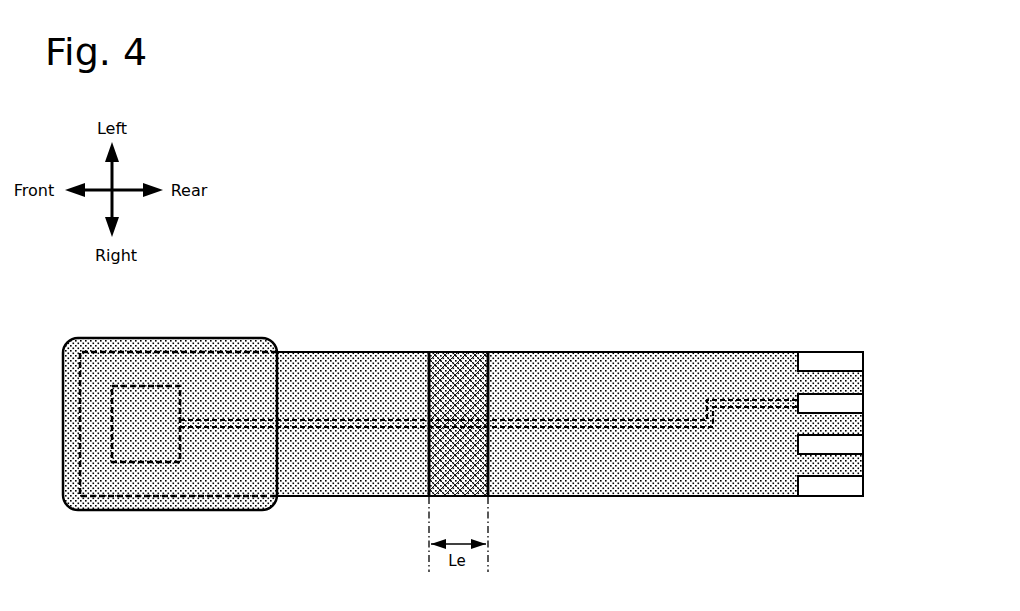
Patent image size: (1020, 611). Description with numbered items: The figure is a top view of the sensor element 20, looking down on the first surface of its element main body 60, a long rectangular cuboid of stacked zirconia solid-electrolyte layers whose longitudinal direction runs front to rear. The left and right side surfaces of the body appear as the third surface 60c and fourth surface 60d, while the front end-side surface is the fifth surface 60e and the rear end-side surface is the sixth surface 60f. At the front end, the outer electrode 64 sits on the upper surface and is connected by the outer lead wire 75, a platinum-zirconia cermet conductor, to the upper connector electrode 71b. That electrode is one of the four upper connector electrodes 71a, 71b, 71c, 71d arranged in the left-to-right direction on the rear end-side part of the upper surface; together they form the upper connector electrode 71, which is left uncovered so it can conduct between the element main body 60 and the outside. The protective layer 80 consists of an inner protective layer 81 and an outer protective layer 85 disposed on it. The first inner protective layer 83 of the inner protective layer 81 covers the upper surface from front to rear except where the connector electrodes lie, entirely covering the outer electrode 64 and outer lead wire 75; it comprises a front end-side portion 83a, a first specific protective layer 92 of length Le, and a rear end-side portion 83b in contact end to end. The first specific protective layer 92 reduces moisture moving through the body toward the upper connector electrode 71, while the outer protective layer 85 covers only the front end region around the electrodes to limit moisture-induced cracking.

The sensor element 20 is at (457, 342).
The element main body 60 is at (594, 401).
The third surface 60c is at (643, 352).
The fourth surface 60d is at (645, 497).
The fifth surface 60e is at (80, 440).
The sixth surface 60f is at (863, 428).
The outer electrode 64 is at (143, 386).
The upper connector electrode 71 is at (855, 391).
The upper connector electrode 71a is at (850, 360).
The upper connector electrode 71b is at (855, 404).
The upper connector electrode 71c is at (852, 446).
The upper connector electrode 71d is at (852, 488).
The outer lead wire 75 is at (300, 418).
The protective layer 80 is at (457, 366).
The inner protective layer 81 is at (594, 382).
The first inner protective layer 83 is at (447, 370).
The front end-side portion 83a is at (408, 360).
The rear end-side portion 83b is at (489, 389).
The outer protective layer 85 is at (140, 358).
The first specific protective layer 92 is at (450, 360).